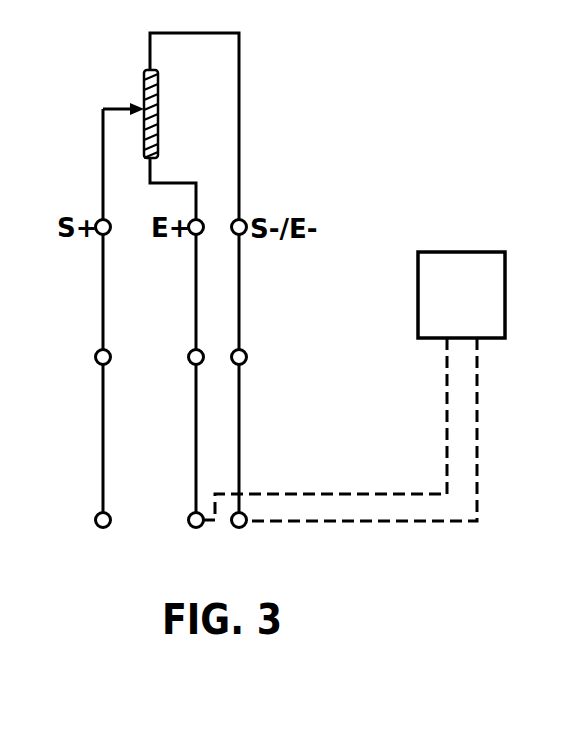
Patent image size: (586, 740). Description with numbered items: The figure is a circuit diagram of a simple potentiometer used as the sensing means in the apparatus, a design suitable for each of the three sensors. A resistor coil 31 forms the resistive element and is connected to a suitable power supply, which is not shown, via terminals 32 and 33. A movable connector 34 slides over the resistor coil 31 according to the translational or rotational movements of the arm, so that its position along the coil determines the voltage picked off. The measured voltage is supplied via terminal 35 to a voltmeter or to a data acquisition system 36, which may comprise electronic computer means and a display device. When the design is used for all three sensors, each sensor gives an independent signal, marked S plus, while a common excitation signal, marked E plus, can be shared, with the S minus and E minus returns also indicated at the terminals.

The resistor coil 31 is at (159, 96).
The terminal 32 is at (191, 527).
The terminal 33 is at (246, 527).
The movable connector 34 is at (136, 108).
The terminal 35 is at (97, 527).
The data acquisition system 36 is at (464, 252).